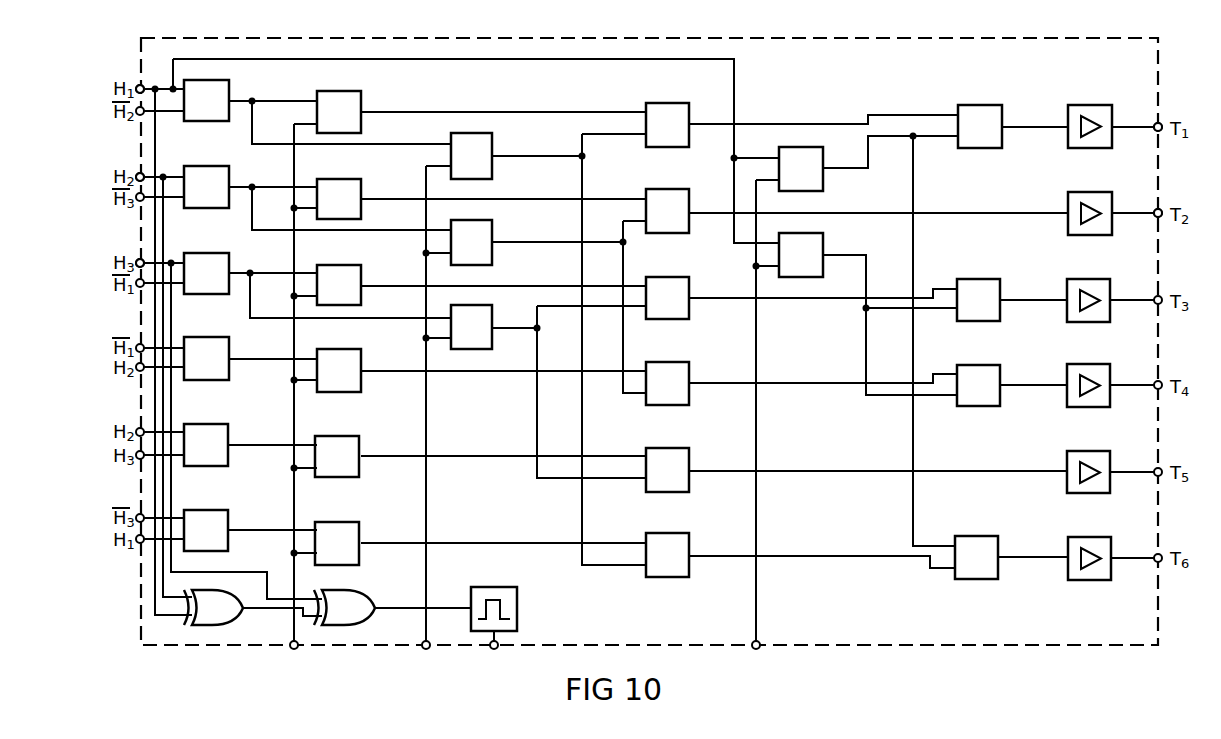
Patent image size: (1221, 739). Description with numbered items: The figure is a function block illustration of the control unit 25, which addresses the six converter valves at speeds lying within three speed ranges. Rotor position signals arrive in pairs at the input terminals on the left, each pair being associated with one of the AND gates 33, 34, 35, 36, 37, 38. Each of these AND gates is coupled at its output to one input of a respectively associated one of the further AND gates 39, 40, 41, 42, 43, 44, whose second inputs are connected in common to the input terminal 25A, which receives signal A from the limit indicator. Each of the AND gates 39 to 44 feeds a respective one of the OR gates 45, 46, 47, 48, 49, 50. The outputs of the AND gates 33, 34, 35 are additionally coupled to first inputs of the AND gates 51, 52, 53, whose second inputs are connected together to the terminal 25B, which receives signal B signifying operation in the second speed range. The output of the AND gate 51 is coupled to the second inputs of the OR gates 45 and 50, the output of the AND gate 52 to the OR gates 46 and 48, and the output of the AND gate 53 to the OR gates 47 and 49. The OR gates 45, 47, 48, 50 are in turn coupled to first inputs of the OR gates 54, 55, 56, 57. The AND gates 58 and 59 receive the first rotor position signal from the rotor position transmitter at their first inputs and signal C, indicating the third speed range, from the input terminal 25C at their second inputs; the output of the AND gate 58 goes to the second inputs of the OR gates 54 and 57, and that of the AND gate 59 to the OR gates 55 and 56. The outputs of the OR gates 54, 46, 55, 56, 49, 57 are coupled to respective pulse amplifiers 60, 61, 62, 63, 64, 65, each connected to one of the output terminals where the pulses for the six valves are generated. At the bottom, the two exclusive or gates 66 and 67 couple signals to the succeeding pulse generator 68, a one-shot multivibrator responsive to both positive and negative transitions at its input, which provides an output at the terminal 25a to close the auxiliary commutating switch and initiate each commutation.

The control unit 25 is at (1142, 69).
The input terminal 25A is at (298, 660).
The terminal 25B is at (427, 660).
The terminal 25a is at (497, 660).
The input terminal 25C is at (752, 660).
The AND gate 33 is at (205, 80).
The AND gate 34 is at (205, 166).
The AND gate 35 is at (203, 253).
The AND gate 36 is at (203, 337).
The AND gate 37 is at (203, 424).
The AND gate 38 is at (203, 510).
The AND gate 39 is at (350, 91).
The AND gate 40 is at (338, 179).
The AND gate 41 is at (350, 251).
The AND gate 42 is at (350, 335).
The AND gate 43 is at (336, 436).
The AND gate 44 is at (336, 522).
The OR gate 45 is at (668, 103).
The OR gate 46 is at (665, 189).
The OR gate 47 is at (660, 277).
The OR gate 48 is at (660, 362).
The OR gate 49 is at (660, 448).
The OR gate 50 is at (668, 517).
The AND gate 51 is at (492, 141).
The AND gate 52 is at (492, 231).
The AND gate 53 is at (492, 316).
The OR gate 54 is at (975, 105).
The OR gate 55 is at (975, 279).
The OR gate 56 is at (972, 365).
The OR gate 57 is at (970, 536).
The AND gate 58 is at (823, 157).
The AND gate 59 is at (823, 243).
The pulse amplifier 60 is at (1082, 105).
The pulse amplifier 61 is at (1095, 176).
The pulse amplifier 62 is at (1086, 279).
The pulse amplifier 63 is at (1086, 364).
The pulse amplifier 64 is at (1093, 435).
The pulse amplifier 65 is at (1093, 521).
The exclusive or gate 66 is at (228, 590).
The exclusive or gate 67 is at (358, 590).
The pulse generator 68 is at (493, 587).